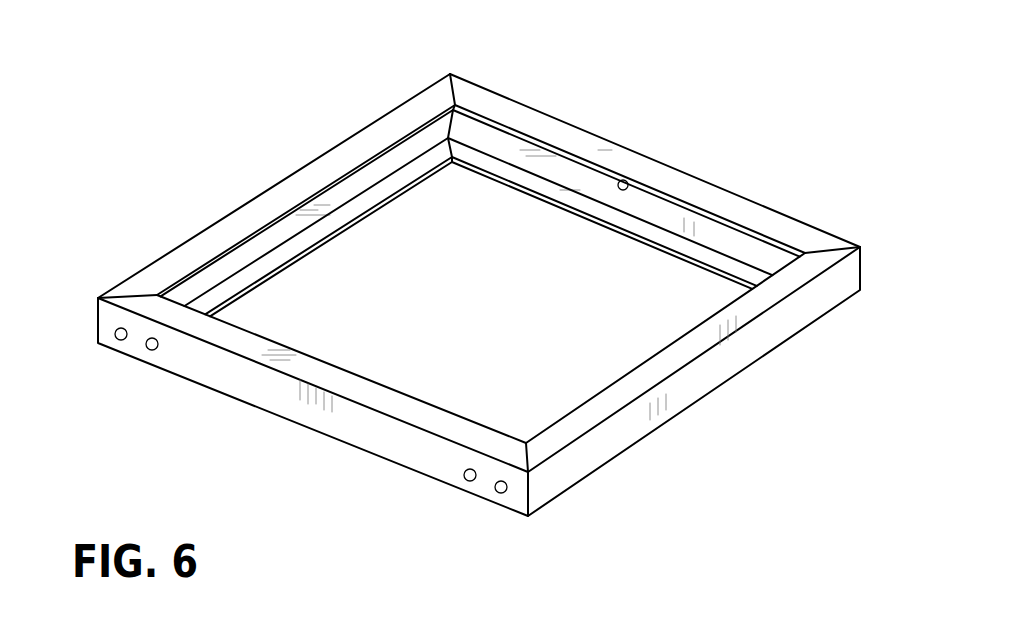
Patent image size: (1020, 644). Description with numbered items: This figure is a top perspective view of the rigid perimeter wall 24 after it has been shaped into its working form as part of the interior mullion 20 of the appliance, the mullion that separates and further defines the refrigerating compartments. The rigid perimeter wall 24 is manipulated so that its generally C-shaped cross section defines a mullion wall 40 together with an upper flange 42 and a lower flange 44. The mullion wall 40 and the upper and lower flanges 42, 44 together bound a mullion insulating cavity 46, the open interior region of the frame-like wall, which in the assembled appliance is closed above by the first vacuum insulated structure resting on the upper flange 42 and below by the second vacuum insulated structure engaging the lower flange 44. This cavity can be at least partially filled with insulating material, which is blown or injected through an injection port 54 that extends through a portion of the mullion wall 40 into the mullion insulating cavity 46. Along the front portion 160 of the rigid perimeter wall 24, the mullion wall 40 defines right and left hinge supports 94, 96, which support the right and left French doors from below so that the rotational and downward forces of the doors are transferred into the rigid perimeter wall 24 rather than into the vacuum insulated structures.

The interior mullion 20 is at (90, 273).
The rigid perimeter wall 24 is at (733, 170).
The mullion wall 40 is at (242, 378).
The upper flange 42 is at (255, 208).
The lower flange 44 is at (727, 265).
The mullion insulating cavity 46 is at (565, 162).
The injection port 54 is at (628, 182).
The right hinge support 94 is at (468, 479).
The left hinge support 96 is at (150, 348).
The front portion 160 is at (383, 448).